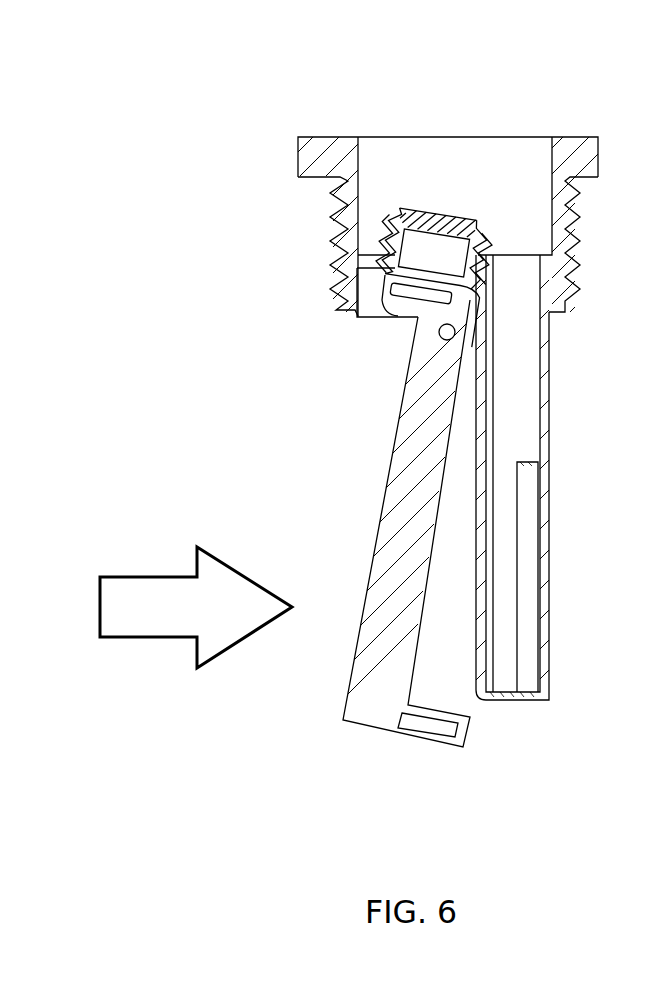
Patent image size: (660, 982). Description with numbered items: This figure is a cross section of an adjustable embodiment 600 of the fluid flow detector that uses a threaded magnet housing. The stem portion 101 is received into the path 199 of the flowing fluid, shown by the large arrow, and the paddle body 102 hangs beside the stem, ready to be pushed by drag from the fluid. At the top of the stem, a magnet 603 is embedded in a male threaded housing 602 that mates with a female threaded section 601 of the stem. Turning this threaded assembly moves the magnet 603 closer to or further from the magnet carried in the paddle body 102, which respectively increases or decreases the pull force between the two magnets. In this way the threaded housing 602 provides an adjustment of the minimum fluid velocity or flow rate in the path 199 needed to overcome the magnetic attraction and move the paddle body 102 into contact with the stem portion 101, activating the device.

The adjustable embodiment 600 is at (400, 23).
The stem portion 101 is at (598, 162).
The paddle body 102 is at (400, 690).
The female threaded section 601 is at (395, 238).
The male threaded housing 602 is at (398, 257).
The magnet 603 is at (435, 257).
The path of the flowing fluid 199 is at (196, 607).